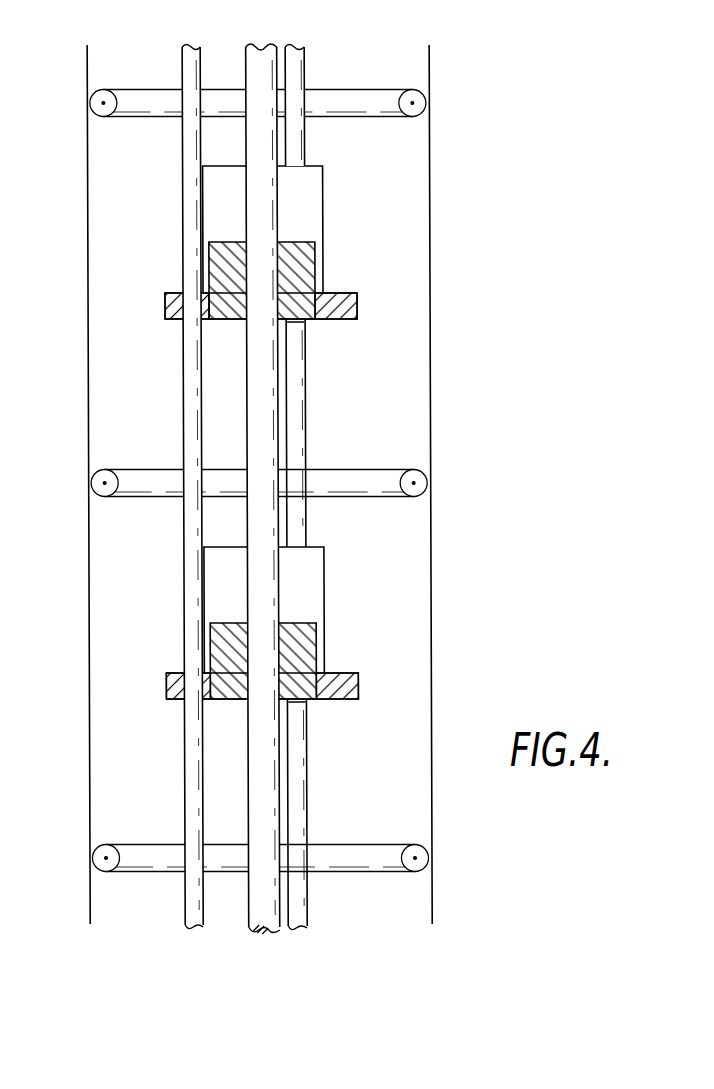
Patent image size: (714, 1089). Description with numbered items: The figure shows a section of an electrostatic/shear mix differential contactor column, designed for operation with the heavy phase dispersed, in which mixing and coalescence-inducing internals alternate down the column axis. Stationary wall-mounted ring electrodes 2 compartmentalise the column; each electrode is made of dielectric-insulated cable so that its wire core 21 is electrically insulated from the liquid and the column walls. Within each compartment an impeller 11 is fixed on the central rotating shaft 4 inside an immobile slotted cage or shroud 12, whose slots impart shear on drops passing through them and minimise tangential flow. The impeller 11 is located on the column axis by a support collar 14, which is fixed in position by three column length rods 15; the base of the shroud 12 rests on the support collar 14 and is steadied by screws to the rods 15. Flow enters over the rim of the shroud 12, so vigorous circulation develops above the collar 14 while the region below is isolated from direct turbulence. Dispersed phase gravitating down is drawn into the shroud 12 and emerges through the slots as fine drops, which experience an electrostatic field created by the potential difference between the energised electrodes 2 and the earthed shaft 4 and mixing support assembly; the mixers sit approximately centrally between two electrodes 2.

The ring electrode 2 is at (128, 481).
The central rotating shaft 4 is at (254, 60).
The impeller 11 is at (298, 277).
The slotted cage or shroud 12 is at (307, 223).
The support collar 14 is at (348, 305).
The column length rods 15 is at (298, 55).
The wire core 21 is at (414, 483).